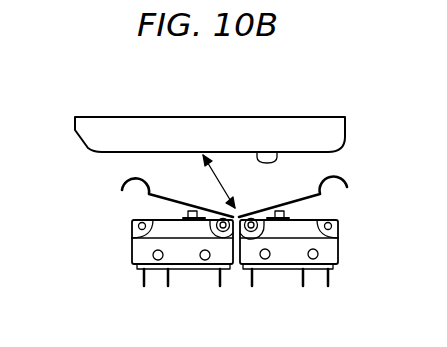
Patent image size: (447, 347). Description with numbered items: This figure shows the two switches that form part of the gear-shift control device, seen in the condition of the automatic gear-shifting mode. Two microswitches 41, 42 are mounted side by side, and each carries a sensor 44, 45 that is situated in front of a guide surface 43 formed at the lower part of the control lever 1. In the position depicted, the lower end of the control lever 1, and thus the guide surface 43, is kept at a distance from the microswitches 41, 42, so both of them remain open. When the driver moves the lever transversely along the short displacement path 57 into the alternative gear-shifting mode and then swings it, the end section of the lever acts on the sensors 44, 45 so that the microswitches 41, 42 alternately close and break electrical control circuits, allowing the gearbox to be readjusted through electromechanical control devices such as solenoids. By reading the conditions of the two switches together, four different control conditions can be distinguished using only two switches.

The control lever 1 is at (205, 118).
The first microswitch 41 is at (185, 250).
The second microswitch 42 is at (293, 242).
The guide surface 43 is at (277, 162).
The first sensor 44 is at (122, 188).
The second sensor 45 is at (348, 184).
The short displacement path 57 is at (218, 180).